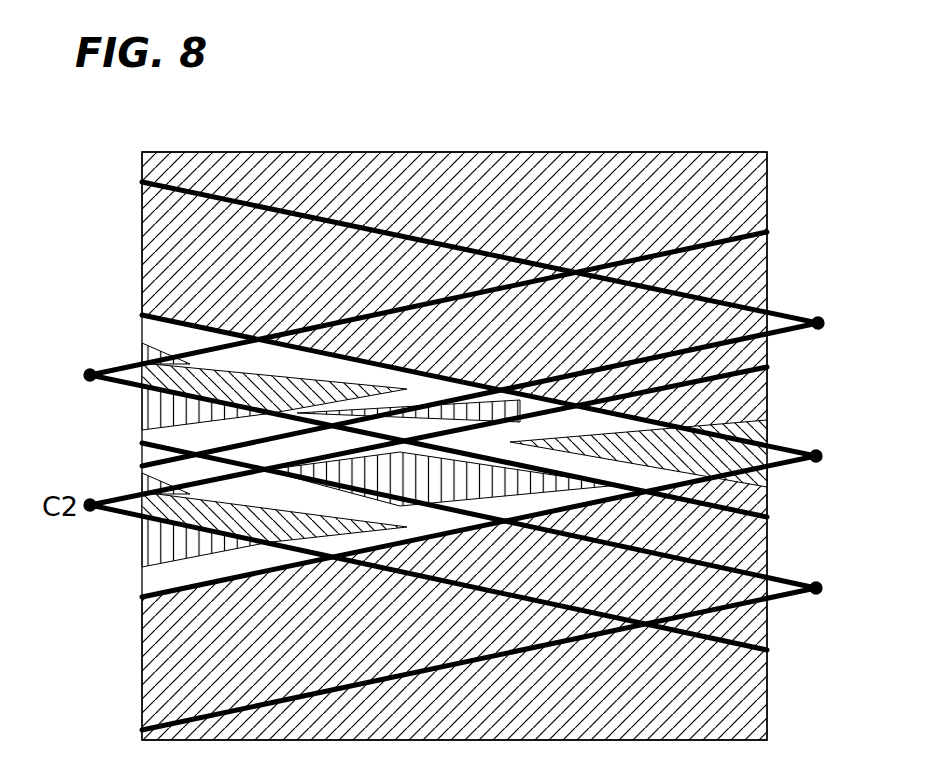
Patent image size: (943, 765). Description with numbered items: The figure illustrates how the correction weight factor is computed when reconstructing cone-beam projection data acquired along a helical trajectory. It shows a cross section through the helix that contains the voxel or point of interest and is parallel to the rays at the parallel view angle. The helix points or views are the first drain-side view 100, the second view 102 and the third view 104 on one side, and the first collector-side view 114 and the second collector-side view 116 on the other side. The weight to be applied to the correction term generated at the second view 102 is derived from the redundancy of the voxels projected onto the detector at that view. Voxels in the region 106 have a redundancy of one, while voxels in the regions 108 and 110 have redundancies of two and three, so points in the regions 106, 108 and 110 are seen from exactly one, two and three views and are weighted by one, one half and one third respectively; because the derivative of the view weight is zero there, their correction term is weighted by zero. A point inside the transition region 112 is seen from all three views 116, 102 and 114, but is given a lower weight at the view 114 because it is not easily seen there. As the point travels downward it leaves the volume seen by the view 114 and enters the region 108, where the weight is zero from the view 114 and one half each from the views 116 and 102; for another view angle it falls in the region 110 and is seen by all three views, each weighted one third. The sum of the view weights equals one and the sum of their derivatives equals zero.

The view D1 100 is at (820, 321).
The view D2 102 is at (818, 454).
The view D3 104 is at (818, 586).
The region of redundancy one 106 is at (263, 462).
The region of redundancy two 108 is at (165, 412).
The region of redundancy three 110 is at (265, 375).
The transition region 112 is at (417, 528).
The view C1 114 is at (90, 372).
The view C2 116 is at (86, 512).